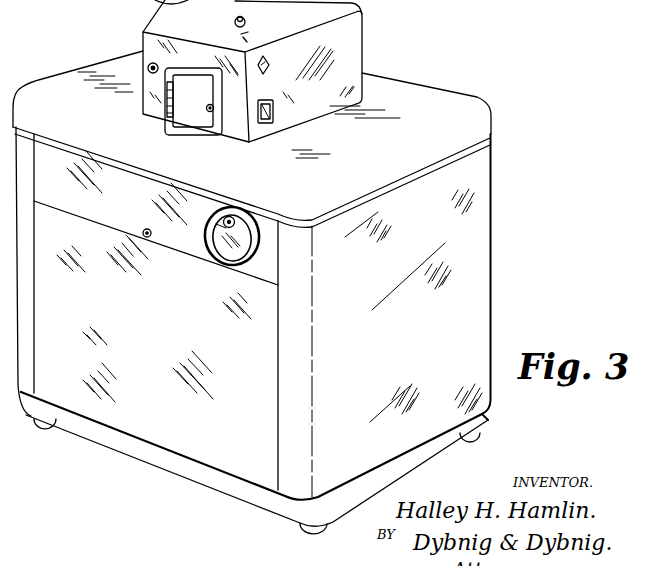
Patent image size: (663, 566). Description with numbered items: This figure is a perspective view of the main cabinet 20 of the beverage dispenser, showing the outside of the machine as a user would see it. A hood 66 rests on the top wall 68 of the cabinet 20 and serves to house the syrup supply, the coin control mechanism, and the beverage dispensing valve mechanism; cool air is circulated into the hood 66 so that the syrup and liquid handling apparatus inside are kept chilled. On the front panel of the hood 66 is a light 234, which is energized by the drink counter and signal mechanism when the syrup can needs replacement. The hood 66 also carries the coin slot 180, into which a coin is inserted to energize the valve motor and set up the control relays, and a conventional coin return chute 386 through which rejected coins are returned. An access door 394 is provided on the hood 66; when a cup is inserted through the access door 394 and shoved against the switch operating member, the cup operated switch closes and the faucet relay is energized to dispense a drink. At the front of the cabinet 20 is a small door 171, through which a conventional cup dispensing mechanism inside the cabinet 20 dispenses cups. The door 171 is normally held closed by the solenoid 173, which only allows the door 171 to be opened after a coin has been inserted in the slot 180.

The cabinet 20 is at (478, 178).
The hood 66 is at (353, 45).
The top wall 68 is at (446, 97).
The light 234 is at (149, 66).
The access door 394 is at (205, 84).
The coin slot 180 is at (268, 62).
The coin return chute 386 is at (274, 106).
The solenoid 173 is at (212, 222).
The small door 171 is at (232, 252).